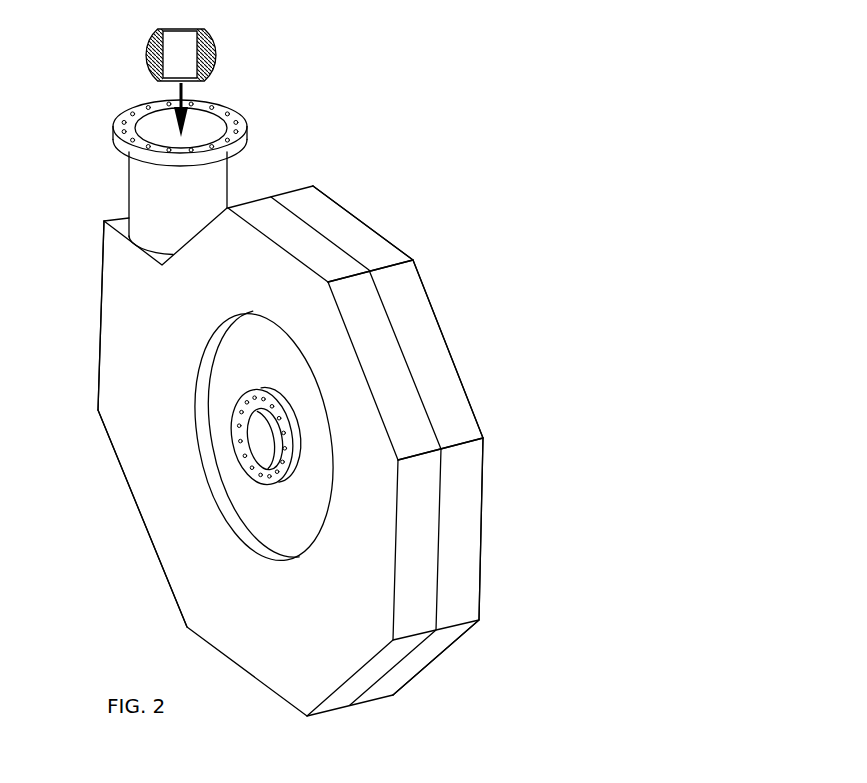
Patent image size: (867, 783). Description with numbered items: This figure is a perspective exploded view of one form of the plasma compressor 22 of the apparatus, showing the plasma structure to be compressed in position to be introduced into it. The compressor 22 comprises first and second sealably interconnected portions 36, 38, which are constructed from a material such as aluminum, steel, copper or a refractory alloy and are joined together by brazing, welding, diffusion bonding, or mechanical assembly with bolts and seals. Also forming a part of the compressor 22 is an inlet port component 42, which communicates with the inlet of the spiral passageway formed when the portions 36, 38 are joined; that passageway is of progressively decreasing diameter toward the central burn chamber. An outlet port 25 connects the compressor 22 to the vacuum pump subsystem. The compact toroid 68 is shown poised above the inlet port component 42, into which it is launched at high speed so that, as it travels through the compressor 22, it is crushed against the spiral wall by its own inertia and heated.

The compressor 22 is at (356, 189).
The outlet port 25 is at (260, 444).
The first portion 36 is at (423, 332).
The second portion 38 is at (158, 423).
The inlet port component 42 is at (138, 193).
The compact toroid 68 is at (146, 56).